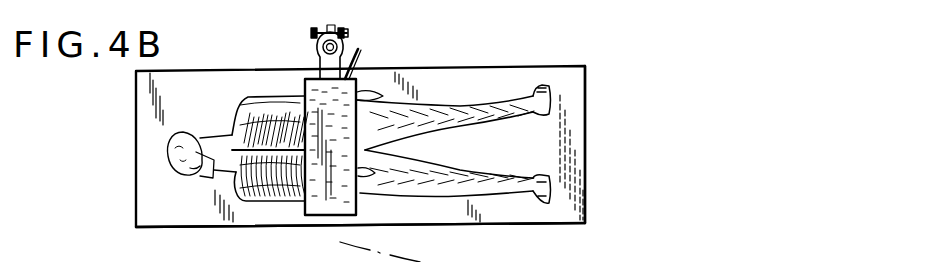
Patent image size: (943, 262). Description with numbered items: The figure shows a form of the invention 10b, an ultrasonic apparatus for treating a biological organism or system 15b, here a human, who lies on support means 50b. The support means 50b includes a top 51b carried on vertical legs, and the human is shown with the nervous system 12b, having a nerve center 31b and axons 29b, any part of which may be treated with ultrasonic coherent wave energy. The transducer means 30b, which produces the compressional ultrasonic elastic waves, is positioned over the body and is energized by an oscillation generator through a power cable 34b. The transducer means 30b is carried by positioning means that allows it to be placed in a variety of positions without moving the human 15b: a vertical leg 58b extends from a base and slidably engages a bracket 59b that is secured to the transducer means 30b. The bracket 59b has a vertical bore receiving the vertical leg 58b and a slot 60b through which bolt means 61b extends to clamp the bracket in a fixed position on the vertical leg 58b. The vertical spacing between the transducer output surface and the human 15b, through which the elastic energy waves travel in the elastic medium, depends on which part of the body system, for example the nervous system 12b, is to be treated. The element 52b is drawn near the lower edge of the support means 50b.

The invention 10b is at (596, 170).
The nervous system 12b is at (315, 155).
The biological organism or system 15b is at (476, 193).
The axons 29b is at (508, 192).
The transducer means 30b is at (305, 213).
The nerve center 31b is at (183, 132).
The power cable 34b is at (360, 58).
The support means 50b is at (136, 167).
The top 51b is at (585, 116).
The bottom wall 52b is at (586, 223).
The vertical leg 58b is at (316, 38).
The bracket 59b is at (320, 47).
The slot 60b is at (331, 27).
The bolt means 61b is at (346, 32).